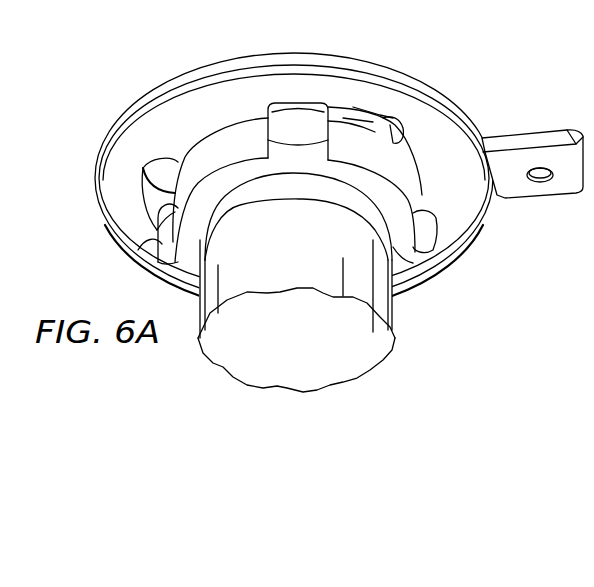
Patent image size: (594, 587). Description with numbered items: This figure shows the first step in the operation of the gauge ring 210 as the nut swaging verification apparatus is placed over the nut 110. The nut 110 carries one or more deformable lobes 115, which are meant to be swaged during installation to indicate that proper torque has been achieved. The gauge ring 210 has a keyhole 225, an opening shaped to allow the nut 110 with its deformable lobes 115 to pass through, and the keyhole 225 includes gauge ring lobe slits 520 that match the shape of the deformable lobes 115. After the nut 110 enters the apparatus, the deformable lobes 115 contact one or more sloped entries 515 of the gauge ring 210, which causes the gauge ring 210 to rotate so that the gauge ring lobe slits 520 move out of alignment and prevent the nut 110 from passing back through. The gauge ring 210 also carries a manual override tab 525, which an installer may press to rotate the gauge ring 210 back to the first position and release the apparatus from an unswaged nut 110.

The nut 110 is at (347, 140).
The deformable lobes 115 is at (153, 258).
The gauge ring 210 is at (95, 183).
The keyhole 225 is at (190, 150).
The sloped entries 515 is at (158, 200).
The gauge ring lobe slits 520 is at (385, 140).
The manual override tab 525 is at (520, 143).